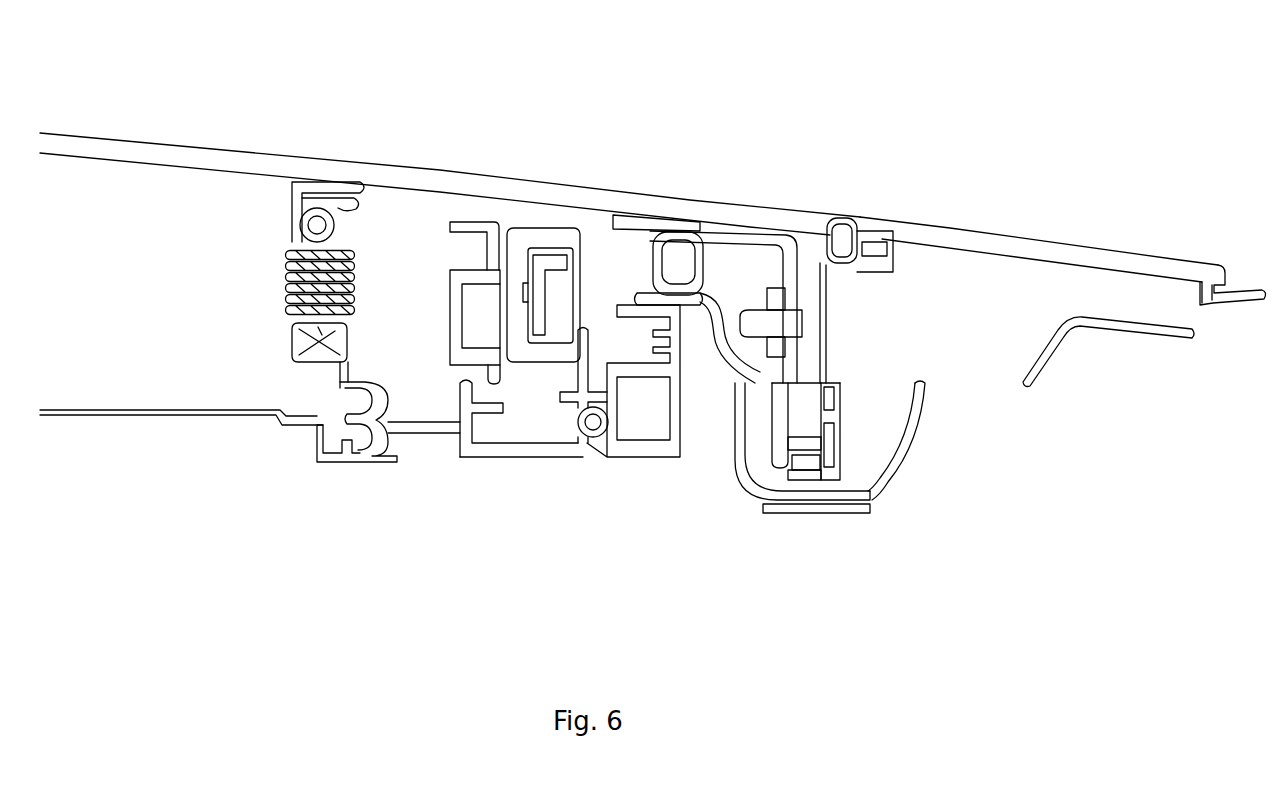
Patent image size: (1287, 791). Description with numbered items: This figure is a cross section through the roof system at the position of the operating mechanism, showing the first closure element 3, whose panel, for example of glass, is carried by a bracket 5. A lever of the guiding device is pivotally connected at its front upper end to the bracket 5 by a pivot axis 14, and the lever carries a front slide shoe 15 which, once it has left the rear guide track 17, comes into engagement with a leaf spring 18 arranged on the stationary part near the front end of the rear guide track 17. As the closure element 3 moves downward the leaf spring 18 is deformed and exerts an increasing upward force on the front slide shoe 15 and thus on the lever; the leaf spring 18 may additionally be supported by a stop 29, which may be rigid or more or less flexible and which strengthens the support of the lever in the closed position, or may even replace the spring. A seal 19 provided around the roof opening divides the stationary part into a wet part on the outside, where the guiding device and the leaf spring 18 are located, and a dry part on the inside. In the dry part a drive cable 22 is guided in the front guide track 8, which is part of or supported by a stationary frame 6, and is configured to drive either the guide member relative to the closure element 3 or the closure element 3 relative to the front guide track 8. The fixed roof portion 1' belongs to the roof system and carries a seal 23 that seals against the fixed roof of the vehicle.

The first closure element 3 is at (488, 190).
The fixed roof portion 1' is at (1039, 185).
The seal 23 is at (1262, 292).
The front guide track 8 is at (485, 472).
The drive cable 22 is at (586, 442).
The seal 19 is at (676, 233).
The bracket 5 is at (784, 228).
The pivot axis 14 is at (778, 318).
The front slide shoe 15 is at (805, 485).
The leaf spring 18 is at (812, 483).
The stop 29 is at (795, 485).
The rear guide track 17 is at (832, 417).
The frame 6 is at (908, 468).